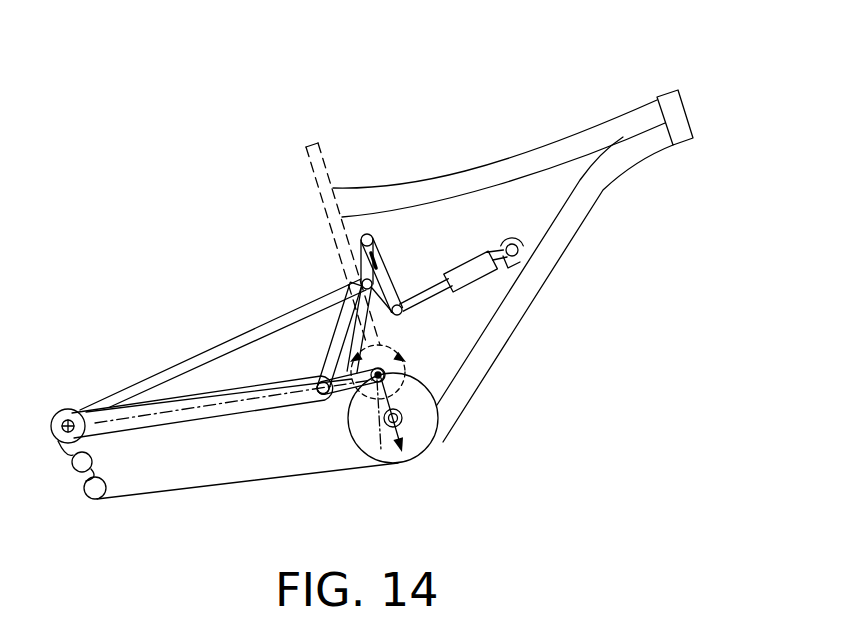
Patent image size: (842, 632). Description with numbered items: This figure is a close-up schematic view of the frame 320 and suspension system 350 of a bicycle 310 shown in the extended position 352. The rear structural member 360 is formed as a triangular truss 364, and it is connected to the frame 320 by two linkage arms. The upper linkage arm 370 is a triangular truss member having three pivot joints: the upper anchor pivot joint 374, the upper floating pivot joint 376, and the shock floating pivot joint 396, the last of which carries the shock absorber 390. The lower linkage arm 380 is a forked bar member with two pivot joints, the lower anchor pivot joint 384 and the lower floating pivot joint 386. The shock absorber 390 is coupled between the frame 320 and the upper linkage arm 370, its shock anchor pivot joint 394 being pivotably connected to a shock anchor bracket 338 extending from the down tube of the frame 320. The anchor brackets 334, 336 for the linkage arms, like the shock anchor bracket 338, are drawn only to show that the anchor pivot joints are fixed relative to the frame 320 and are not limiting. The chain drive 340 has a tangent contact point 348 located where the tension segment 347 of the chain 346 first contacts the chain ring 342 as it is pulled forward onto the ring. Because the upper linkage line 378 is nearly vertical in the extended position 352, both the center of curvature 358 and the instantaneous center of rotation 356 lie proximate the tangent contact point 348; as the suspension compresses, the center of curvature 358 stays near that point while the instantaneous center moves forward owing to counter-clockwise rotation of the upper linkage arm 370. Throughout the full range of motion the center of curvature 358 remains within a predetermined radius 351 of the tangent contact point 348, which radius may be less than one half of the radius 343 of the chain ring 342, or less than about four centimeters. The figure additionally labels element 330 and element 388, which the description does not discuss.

The bicycle 310 is at (215, 66).
The frame 320 is at (656, 240).
The seat tube 330 is at (312, 142).
The anchor bracket 334 is at (336, 218).
The anchor bracket 336 is at (446, 374).
The shock anchor bracket 338 is at (516, 244).
The chain drive 340 is at (503, 507).
The chain ring 342 is at (437, 432).
The radius of the chain ring 343 is at (412, 440).
The chain 346 is at (217, 483).
The tension segment 347 is at (175, 395).
The tangent contact point 348 is at (350, 374).
The suspension system 350 is at (154, 272).
The predetermined radius 351 is at (263, 347).
The extended position 352 is at (103, 425).
The instantaneous center of rotation 356 is at (385, 426).
The center of curvature 358 is at (358, 337).
The structural member 360 is at (124, 391).
The triangular truss 364 is at (173, 420).
The upper linkage arm 370 is at (380, 268).
The upper anchor pivot joint 374 is at (367, 234).
The upper floating pivot joint 376 is at (360, 277).
The upper linkage line 378 is at (350, 290).
The lower linkage arm 380 is at (328, 394).
The lower anchor pivot joint 384 is at (470, 397).
The lower floating pivot joint 386 is at (315, 394).
The upper chain run 388 is at (377, 437).
The shock absorber 390 is at (471, 262).
The shock anchor pivot joint 394 is at (530, 258).
The shock floating pivot joint 396 is at (405, 307).